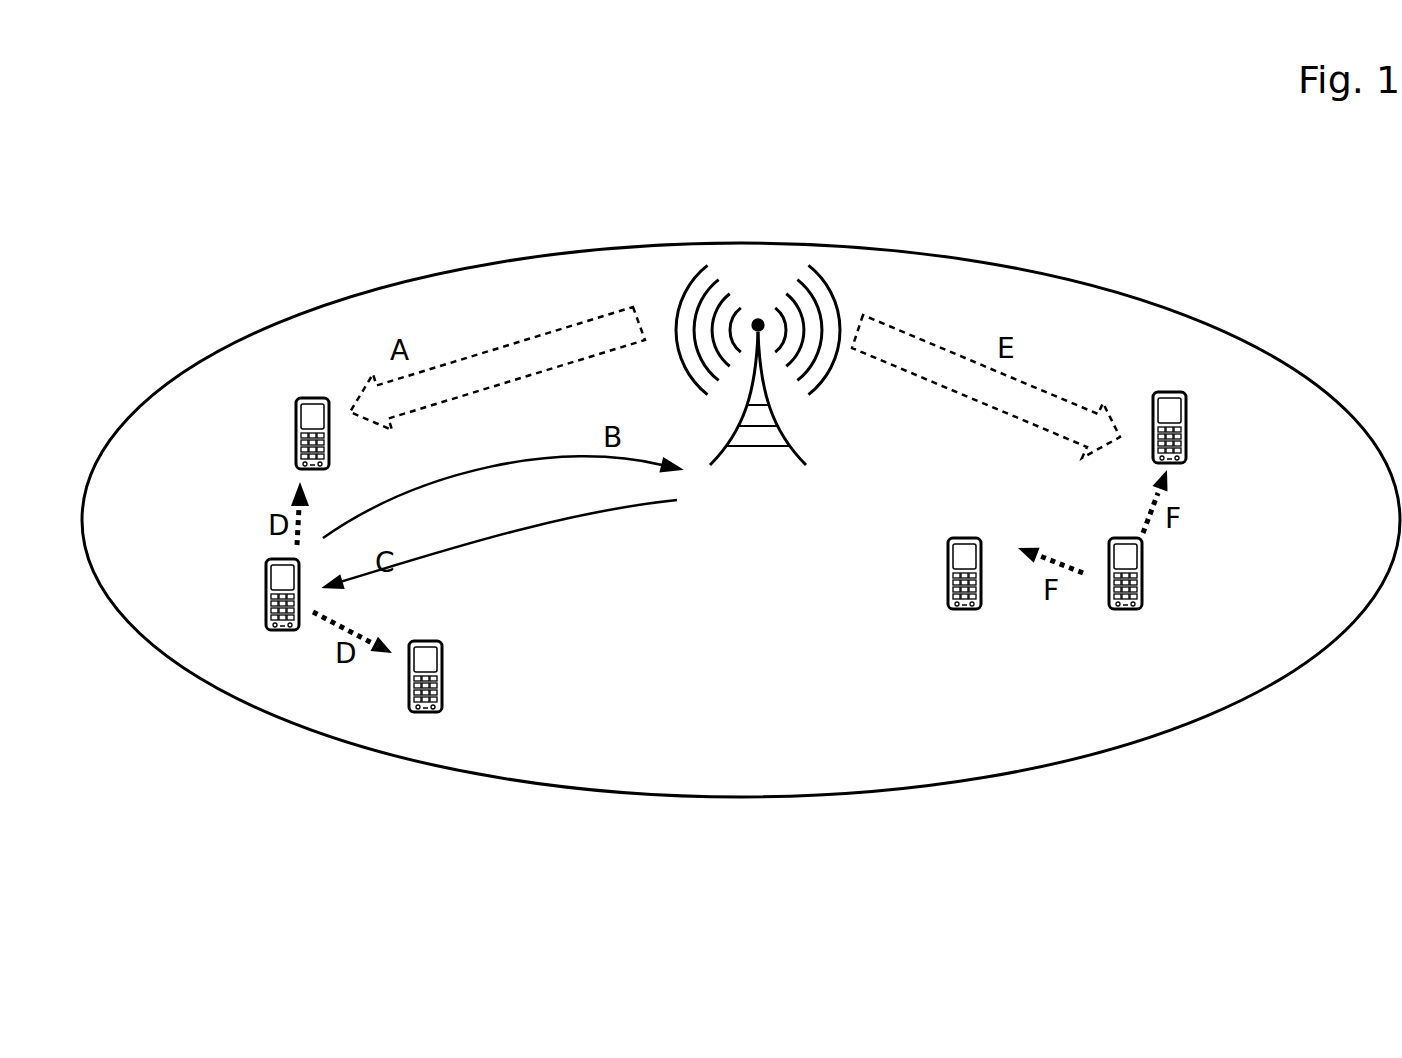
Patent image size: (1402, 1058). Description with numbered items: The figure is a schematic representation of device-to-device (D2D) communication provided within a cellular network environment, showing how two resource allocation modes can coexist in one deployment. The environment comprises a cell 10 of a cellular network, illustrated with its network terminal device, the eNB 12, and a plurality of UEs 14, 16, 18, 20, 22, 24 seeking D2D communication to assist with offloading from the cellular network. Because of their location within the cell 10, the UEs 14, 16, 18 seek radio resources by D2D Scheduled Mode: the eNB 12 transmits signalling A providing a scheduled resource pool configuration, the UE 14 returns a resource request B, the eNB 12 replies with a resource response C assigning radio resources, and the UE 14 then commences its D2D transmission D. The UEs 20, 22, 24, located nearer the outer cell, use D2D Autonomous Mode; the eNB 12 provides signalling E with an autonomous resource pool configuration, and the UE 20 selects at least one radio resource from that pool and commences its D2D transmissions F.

The cell 10 is at (730, 797).
The eNB 12 is at (758, 318).
The UE 14 is at (278, 631).
The UE 16 is at (297, 427).
The UE 18 is at (423, 713).
The UE 20 is at (1127, 611).
The UE 22 is at (1183, 427).
The UE 24 is at (965, 611).